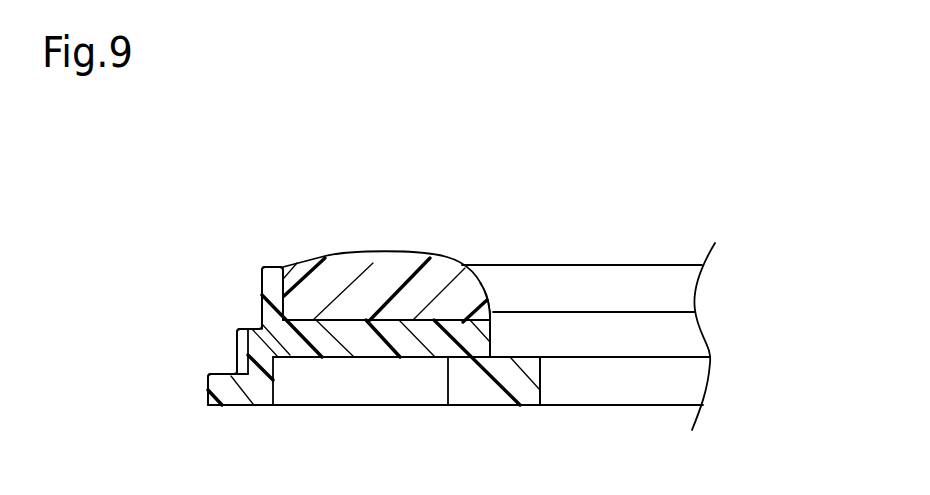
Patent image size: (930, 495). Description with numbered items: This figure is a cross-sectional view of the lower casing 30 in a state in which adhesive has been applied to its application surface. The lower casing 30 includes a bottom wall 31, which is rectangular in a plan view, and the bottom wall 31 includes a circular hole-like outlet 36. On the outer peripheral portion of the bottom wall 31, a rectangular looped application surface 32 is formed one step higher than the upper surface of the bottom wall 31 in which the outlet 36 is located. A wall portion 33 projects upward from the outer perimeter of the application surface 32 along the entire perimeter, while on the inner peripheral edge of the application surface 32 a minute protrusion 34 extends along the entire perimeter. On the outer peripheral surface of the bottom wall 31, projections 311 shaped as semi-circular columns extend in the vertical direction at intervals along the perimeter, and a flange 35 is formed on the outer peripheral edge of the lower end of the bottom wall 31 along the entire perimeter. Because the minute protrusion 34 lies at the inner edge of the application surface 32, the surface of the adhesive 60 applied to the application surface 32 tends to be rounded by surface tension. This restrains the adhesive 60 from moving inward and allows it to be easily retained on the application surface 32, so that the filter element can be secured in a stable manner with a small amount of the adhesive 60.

The lower casing 30 is at (222, 272).
The bottom wall 31 is at (502, 406).
The projections 311 is at (235, 347).
The application surface 32 is at (386, 313).
The wall portion 33 is at (277, 266).
The minute protrusion 34 is at (493, 313).
The flange 35 is at (205, 390).
The outlet 36 is at (545, 400).
The adhesive 60 is at (393, 252).